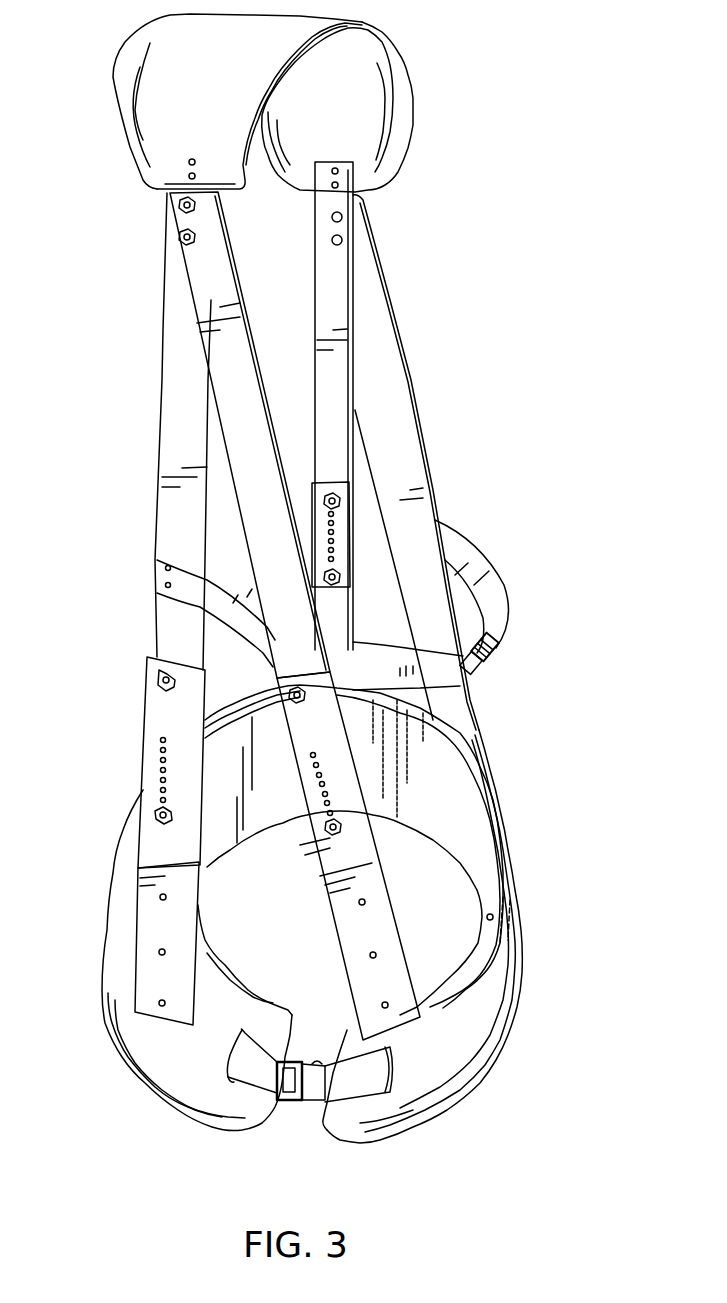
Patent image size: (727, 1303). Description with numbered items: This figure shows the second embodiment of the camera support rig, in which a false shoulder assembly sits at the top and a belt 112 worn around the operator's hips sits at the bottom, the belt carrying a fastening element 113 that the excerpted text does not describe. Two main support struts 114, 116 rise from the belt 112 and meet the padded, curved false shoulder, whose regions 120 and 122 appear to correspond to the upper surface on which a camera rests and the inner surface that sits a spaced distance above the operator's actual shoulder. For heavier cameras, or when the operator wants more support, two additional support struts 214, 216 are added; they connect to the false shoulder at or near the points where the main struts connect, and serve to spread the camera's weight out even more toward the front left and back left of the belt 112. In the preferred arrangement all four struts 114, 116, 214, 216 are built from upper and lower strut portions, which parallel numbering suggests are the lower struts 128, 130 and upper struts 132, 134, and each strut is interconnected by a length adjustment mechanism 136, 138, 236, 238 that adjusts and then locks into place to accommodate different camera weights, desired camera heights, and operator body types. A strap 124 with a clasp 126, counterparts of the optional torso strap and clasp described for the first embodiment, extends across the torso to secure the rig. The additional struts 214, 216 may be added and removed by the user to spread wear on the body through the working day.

The hip belt 112 is at (473, 787).
The hip belt buckle strap 113 is at (303, 1103).
The support strut 114 is at (120, 609).
The support strut 116 is at (426, 446).
The head rest 120 is at (357, 25).
The head rest right pad 122 is at (378, 97).
The buckle 124 is at (493, 637).
The buckle receiver 126 is at (478, 680).
The lower left strap 128 is at (157, 930).
The chest band 130 is at (340, 615).
The left vertical strap 132 is at (162, 410).
The center vertical strap 134 is at (343, 287).
The length adjustment mechanism 136 is at (147, 788).
The length adjustment mechanism 138 is at (343, 520).
The additional support strut 214 is at (237, 488).
The additional support strut 216 is at (410, 372).
The length adjustment mechanism 236 is at (373, 868).
The length adjustment mechanism 238 is at (425, 558).